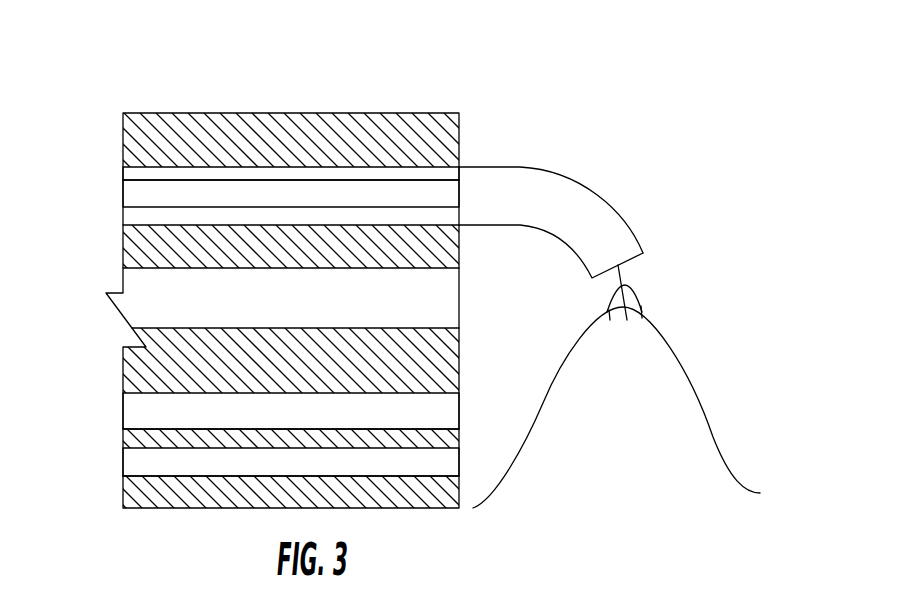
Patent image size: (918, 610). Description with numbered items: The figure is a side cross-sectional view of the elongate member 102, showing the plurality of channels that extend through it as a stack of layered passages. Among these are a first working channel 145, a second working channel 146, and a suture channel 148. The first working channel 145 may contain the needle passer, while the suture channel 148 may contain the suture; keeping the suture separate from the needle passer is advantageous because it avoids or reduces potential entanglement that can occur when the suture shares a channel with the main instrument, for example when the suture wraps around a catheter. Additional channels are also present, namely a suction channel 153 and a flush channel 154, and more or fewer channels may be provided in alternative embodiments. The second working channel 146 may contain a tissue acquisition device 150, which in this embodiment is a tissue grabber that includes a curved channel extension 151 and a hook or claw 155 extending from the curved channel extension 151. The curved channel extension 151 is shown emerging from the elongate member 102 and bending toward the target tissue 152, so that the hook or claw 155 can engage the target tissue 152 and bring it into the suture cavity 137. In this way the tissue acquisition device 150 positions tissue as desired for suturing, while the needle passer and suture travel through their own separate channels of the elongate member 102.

The elongate member 102 is at (152, 75).
The second working channel 146 is at (283, 172).
The suture channel 148 is at (392, 190).
The first working channel 145 is at (213, 288).
The suction channel 153 is at (153, 407).
The flush channel 154 is at (150, 463).
The tissue acquisition device 150 is at (540, 157).
The curved channel extension 151 is at (614, 224).
The hook or claw 155 is at (628, 278).
The suture cavity 137 is at (712, 303).
The target tissue 152 is at (635, 389).